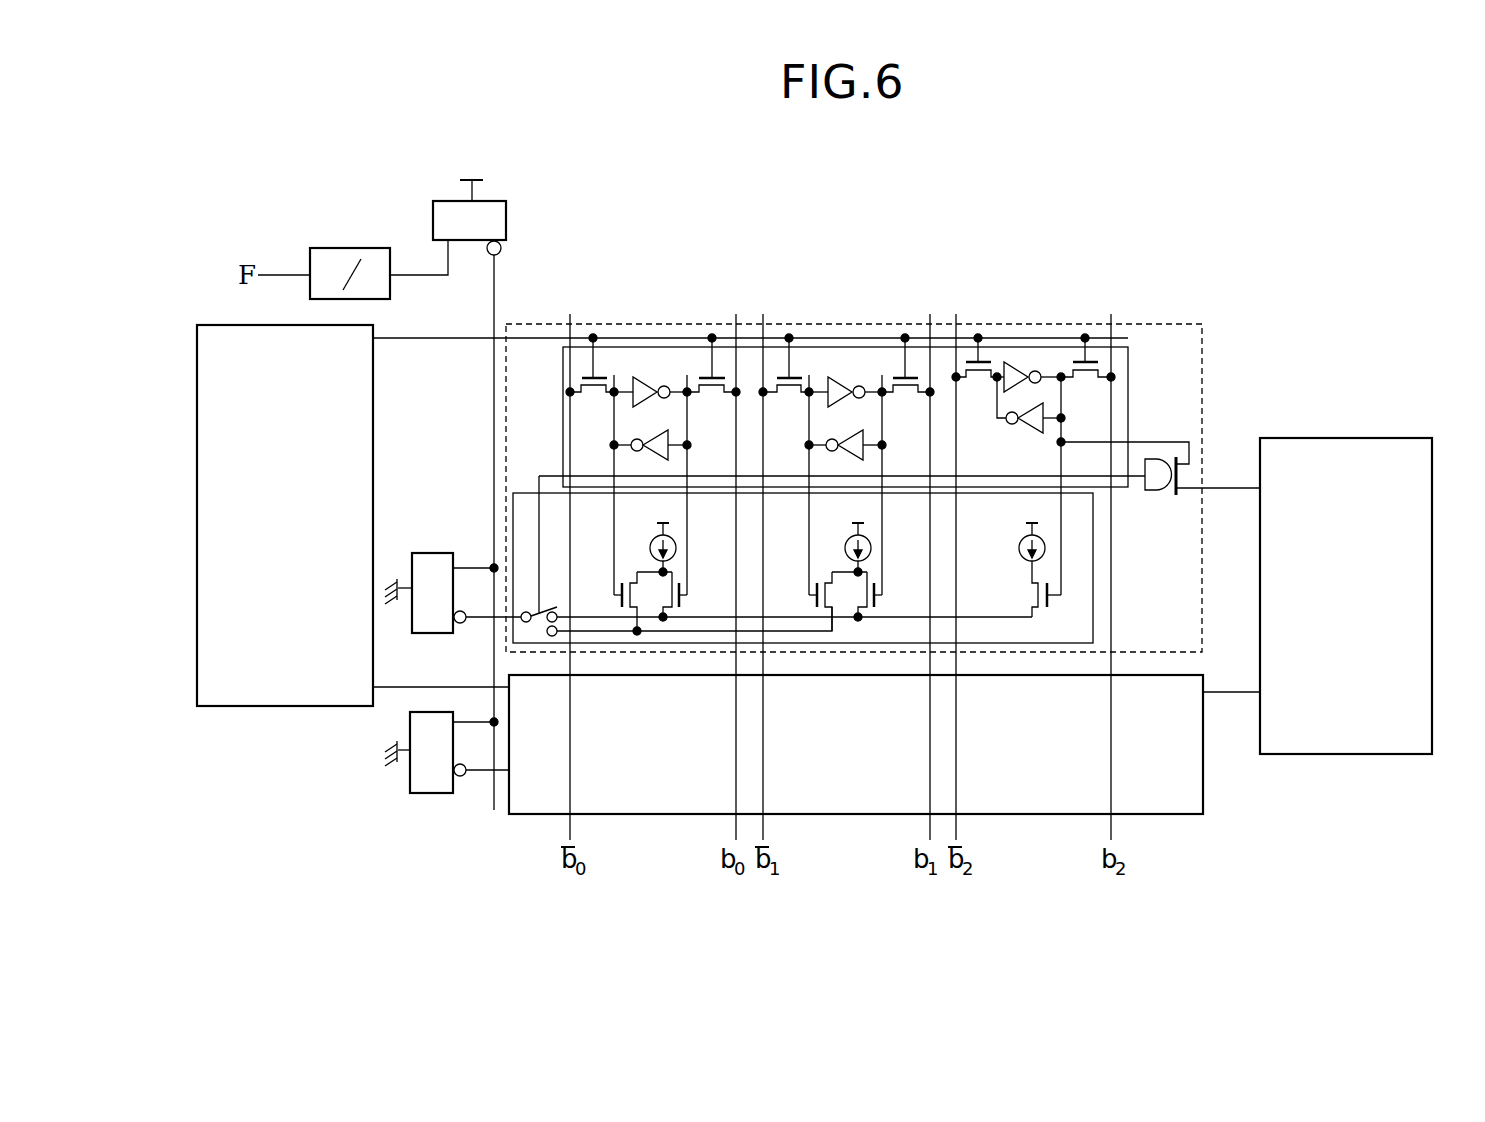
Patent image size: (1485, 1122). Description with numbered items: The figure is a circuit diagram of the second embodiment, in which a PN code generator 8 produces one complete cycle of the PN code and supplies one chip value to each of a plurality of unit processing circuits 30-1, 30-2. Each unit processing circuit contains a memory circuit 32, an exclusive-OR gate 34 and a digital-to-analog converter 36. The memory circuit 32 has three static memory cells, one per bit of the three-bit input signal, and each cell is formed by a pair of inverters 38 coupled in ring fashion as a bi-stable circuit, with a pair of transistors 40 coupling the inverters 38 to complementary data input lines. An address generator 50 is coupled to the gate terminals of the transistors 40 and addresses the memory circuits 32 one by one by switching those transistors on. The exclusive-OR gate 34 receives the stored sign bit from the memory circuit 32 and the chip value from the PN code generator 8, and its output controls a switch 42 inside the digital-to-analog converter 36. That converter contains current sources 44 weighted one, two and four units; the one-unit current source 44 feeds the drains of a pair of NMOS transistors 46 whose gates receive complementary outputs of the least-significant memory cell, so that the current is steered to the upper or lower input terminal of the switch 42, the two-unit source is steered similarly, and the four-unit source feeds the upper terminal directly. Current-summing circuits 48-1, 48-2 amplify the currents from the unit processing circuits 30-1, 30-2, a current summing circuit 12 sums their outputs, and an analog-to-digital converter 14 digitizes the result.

The PN code generator 8 is at (1312, 437).
The current summing circuit 12 is at (508, 228).
The analog-to-digital converter 14 is at (347, 250).
The unit processing circuit 30-1 is at (1160, 323).
The unit processing circuit 30-2 is at (1203, 780).
The memory circuit 32 is at (1128, 413).
The exclusive-OR gate 34 is at (1164, 494).
The digital-to-analog converter 36 is at (1097, 601).
The inverter 38 is at (651, 372).
The transistor 40 is at (605, 367).
The switch 42 is at (542, 605).
The current source 44 is at (676, 534).
The NMOS transistor 46 is at (673, 579).
The current-summing circuit 48-1 is at (432, 551).
The current-summing circuit 48-2 is at (433, 795).
The address generator 50 is at (288, 708).